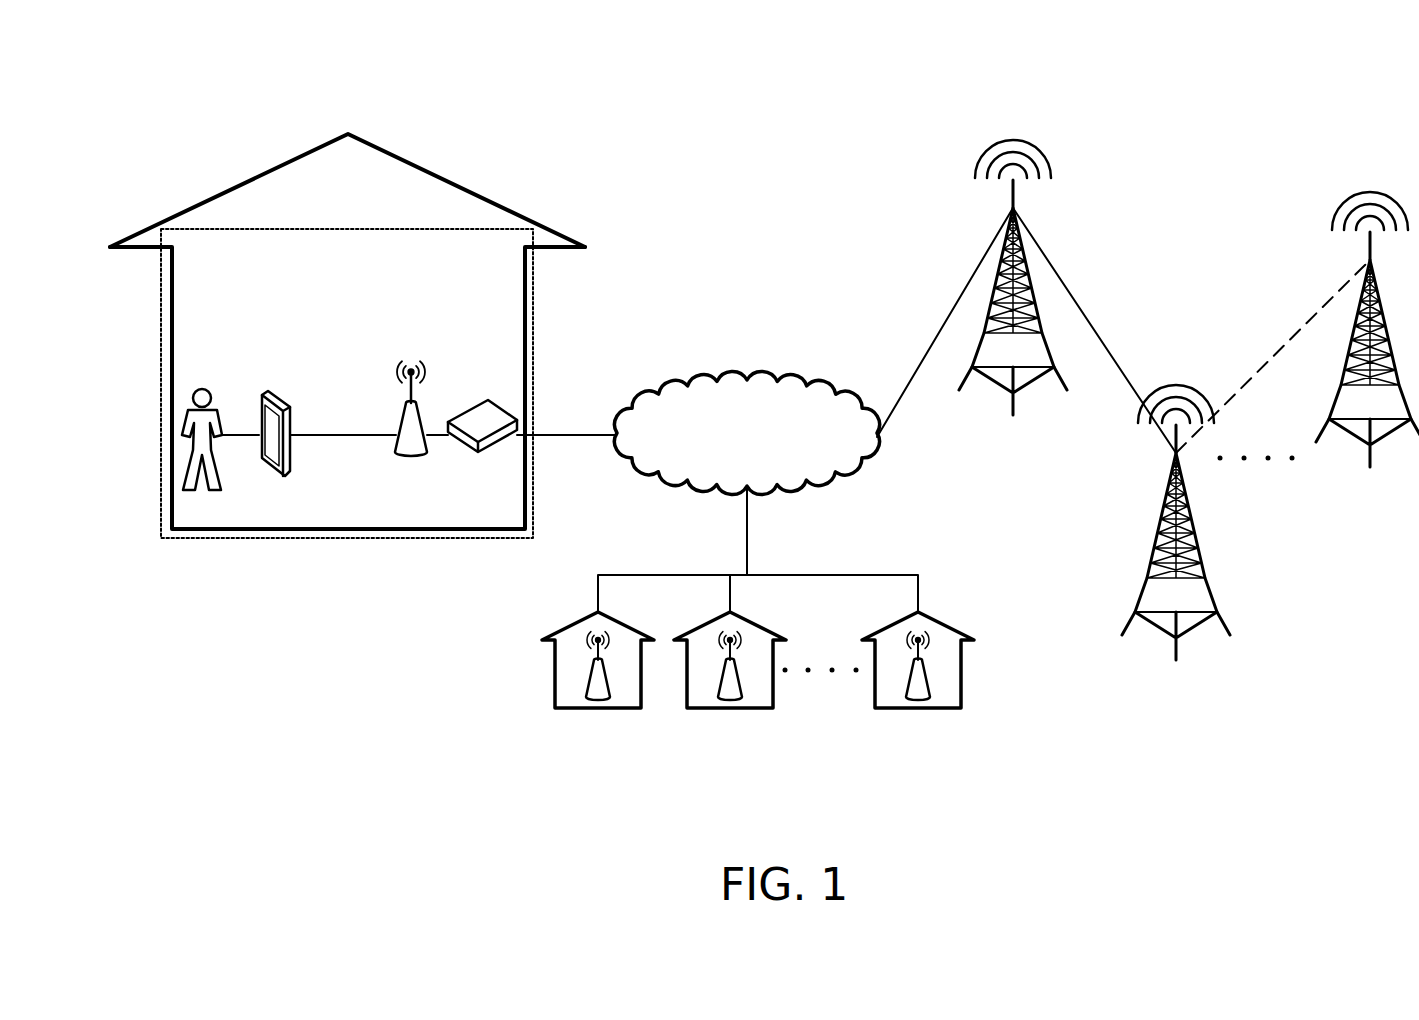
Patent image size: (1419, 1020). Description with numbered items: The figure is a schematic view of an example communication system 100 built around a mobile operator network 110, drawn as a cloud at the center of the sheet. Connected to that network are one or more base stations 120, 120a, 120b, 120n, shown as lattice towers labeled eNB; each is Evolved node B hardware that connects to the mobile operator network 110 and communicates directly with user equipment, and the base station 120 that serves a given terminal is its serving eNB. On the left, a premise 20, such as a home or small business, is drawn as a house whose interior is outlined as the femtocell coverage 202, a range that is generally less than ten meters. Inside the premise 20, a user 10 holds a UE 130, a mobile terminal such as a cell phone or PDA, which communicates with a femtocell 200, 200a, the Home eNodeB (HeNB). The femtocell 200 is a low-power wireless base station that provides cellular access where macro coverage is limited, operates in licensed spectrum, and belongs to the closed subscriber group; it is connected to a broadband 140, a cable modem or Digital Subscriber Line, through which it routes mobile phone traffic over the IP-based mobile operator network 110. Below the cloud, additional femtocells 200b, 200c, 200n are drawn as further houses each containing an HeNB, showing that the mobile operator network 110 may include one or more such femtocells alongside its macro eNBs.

The communication system 100 is at (1173, 58).
The premise 20 is at (245, 180).
The femtocell coverage 202 is at (480, 264).
The user 10 is at (205, 387).
The user equipment (UE) 130 is at (279, 394).
The femtocell 200 is at (655, 556).
The femtocell 200a is at (393, 421).
The femtocell 200b is at (598, 698).
The femtocell 200c is at (730, 698).
The femtocell 200n is at (918, 698).
The broadband 140 is at (486, 396).
The mobile operator network 110 is at (748, 374).
The base station 120 is at (1184, 400).
The base station 120a is at (1008, 305).
The base station 120b is at (1155, 522).
The base station 120n is at (1363, 356).